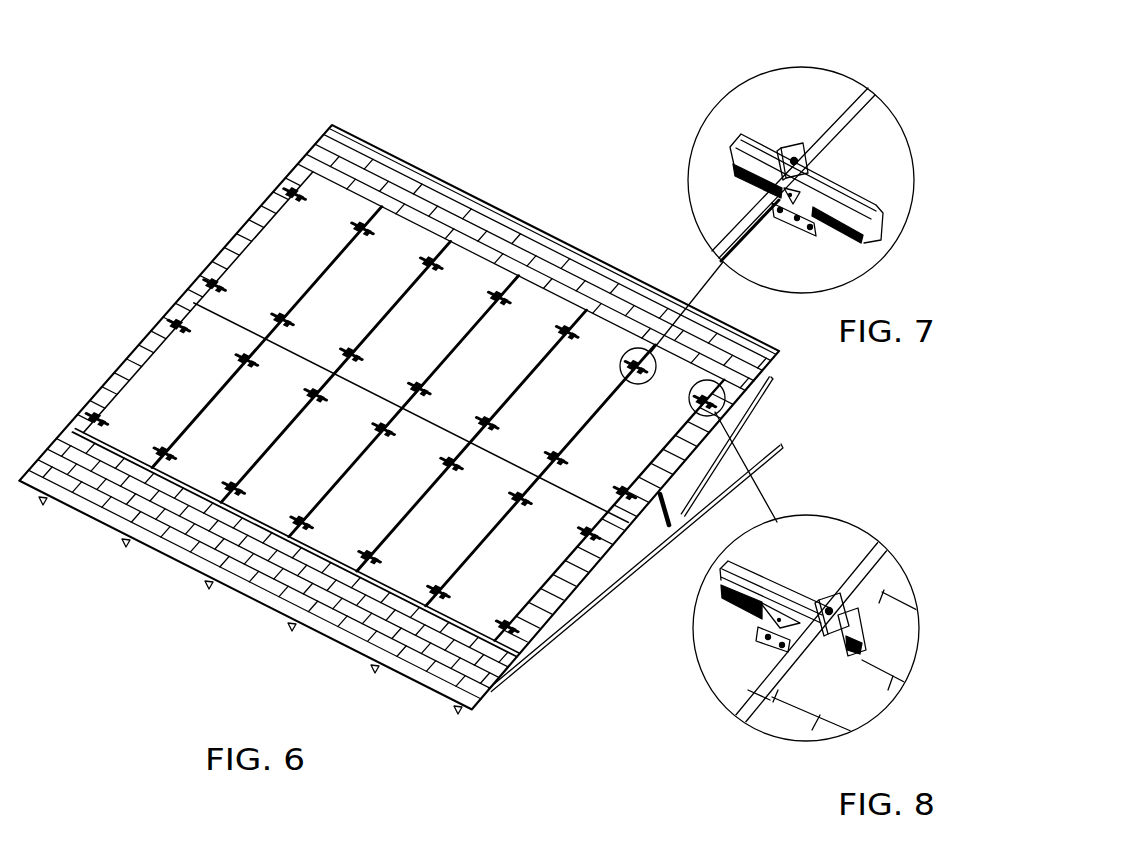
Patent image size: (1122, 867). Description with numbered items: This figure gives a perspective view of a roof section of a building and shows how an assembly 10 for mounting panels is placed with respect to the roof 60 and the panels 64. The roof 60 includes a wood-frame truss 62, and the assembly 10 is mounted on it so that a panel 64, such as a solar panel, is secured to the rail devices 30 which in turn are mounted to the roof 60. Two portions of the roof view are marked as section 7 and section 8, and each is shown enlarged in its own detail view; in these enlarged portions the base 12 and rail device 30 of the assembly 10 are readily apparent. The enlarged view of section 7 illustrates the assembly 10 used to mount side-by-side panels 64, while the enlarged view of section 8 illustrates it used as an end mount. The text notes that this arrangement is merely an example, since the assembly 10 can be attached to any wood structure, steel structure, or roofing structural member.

In FIG. 6, the section 7 is at (640, 348).
In FIG. 6, the section 8 is at (709, 381).
In FIG. 6, the assembly 10 is at (494, 296).
In FIG. 7, the assembly 10 is at (779, 95).
In FIG. 8, the assembly 10 is at (818, 552).
In FIG. 7, the base 12 is at (815, 234).
In FIG. 8, the base 12 is at (766, 648).
In FIG. 7, the rail device 30 is at (738, 148).
In FIG. 8, the rail device 30 is at (768, 580).
In FIG. 6, the roof 60 is at (447, 668).
In FIG. 6, the wood-frame truss 62 is at (603, 600).
In FIG. 6, the panel 64 is at (298, 260).